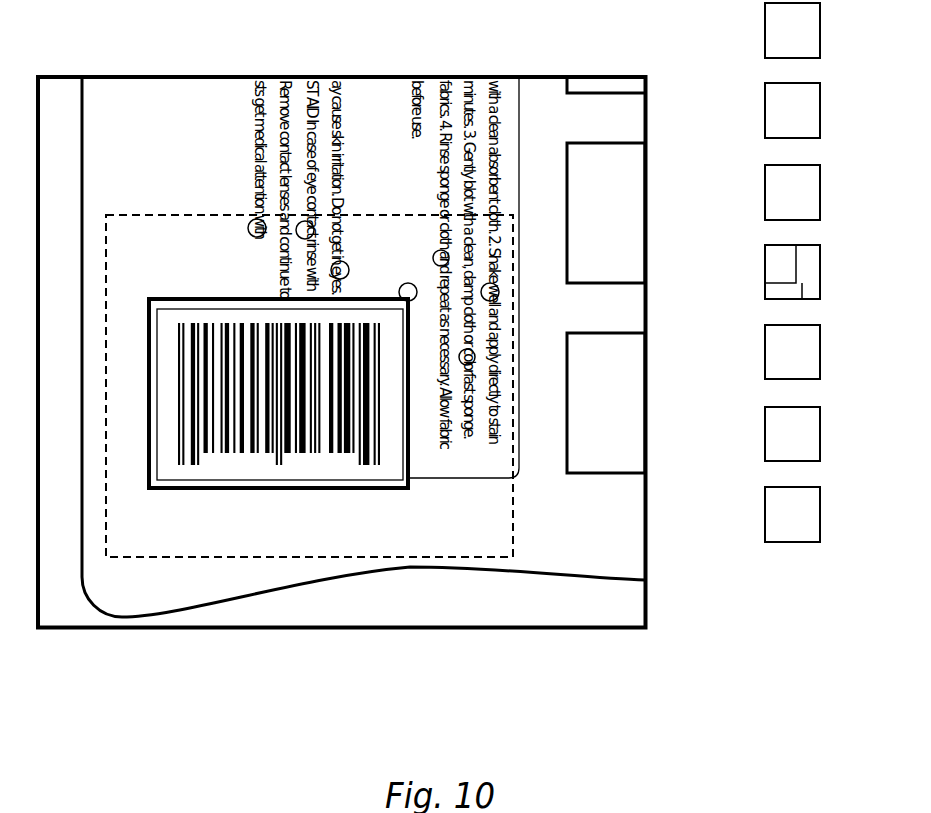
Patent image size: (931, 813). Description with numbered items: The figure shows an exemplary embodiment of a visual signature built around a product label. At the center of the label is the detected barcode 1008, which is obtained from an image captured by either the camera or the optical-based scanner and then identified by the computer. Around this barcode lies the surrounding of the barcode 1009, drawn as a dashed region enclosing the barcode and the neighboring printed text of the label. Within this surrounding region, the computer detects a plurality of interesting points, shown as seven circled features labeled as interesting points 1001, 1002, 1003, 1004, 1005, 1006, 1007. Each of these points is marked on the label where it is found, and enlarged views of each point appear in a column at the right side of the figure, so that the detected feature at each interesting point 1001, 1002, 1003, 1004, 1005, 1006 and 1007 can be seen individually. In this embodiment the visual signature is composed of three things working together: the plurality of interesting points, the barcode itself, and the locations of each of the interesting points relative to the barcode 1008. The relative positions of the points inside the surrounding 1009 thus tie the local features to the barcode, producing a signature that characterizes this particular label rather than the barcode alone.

The interesting point 1001 is at (249, 222).
The interesting point 1002 is at (298, 222).
The interesting point 1003 is at (346, 263).
The interesting point 1004 is at (408, 283).
The interesting point 1005 is at (449, 257).
The interesting point 1006 is at (471, 366).
The interesting point 1007 is at (496, 285).
The detected barcode 1008 is at (268, 492).
The surrounding of the barcode 1009 is at (140, 558).